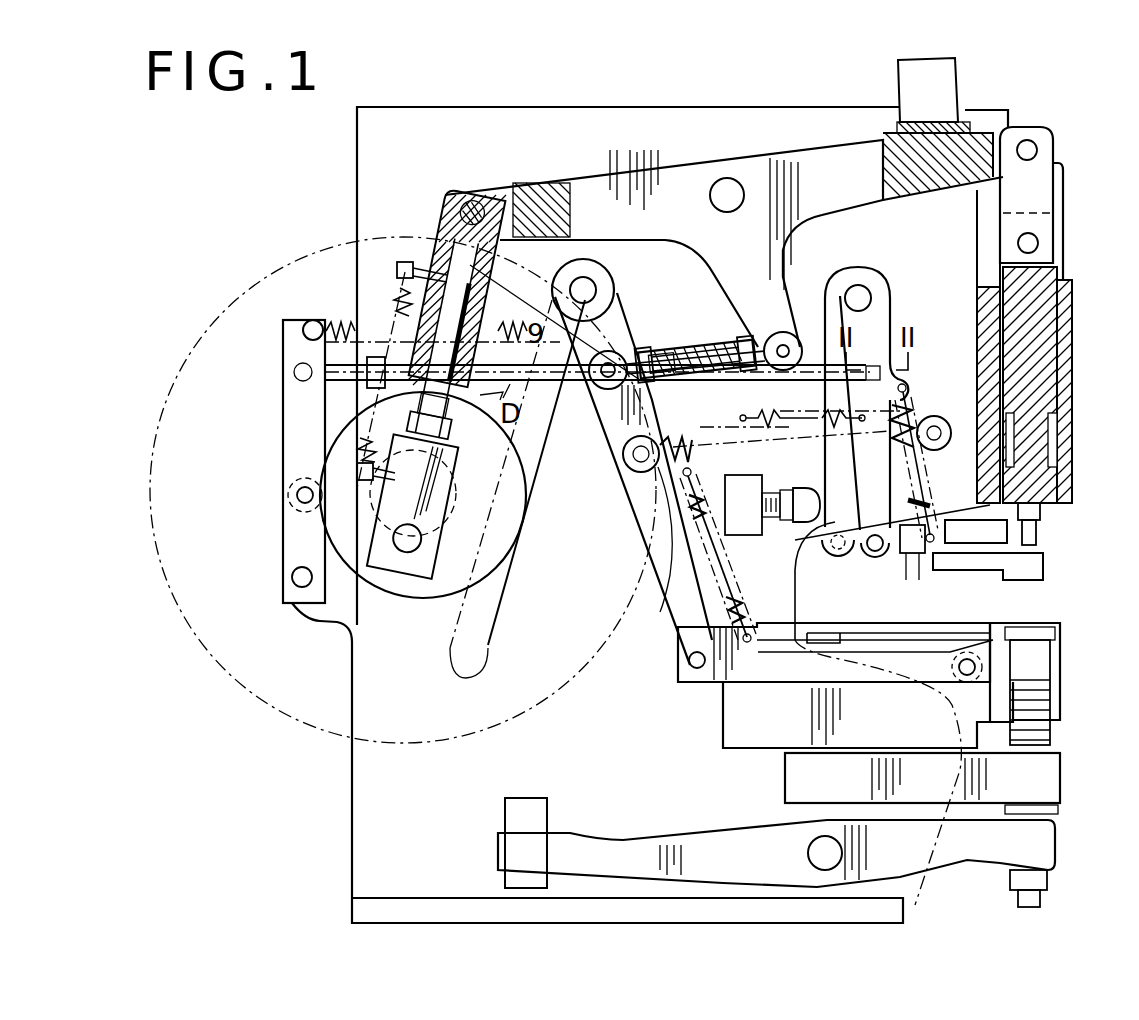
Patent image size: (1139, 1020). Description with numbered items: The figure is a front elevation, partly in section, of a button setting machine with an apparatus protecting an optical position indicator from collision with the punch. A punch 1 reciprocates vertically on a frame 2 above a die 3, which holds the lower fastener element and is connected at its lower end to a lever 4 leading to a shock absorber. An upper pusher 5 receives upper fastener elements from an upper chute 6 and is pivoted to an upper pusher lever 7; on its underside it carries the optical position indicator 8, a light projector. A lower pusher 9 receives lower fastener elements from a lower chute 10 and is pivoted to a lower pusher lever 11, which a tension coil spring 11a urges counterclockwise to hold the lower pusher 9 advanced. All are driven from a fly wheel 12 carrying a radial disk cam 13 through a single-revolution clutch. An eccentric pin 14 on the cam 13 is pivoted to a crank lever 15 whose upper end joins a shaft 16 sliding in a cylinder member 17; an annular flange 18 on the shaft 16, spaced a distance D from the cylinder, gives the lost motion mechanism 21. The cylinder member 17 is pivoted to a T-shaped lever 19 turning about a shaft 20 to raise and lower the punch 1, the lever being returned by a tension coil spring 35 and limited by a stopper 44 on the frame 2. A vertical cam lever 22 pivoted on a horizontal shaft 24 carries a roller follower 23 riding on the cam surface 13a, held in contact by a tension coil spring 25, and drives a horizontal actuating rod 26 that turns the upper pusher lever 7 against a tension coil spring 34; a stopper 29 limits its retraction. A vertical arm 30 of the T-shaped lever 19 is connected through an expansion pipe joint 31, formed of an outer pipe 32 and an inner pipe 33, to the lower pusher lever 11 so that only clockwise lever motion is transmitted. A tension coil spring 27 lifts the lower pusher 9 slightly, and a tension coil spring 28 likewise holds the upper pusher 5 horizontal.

The punch 1 is at (1040, 525).
The frame 2 is at (1065, 325).
The die 3 is at (1060, 660).
The lever 4 is at (644, 848).
The upper pusher 5 is at (910, 556).
The upper chute 6 is at (972, 545).
The upper pusher lever 7 is at (878, 318).
The optical position indicator 8 is at (1045, 566).
The lower pusher 9 is at (800, 683).
The lower chute 10 is at (825, 632).
The lower pusher lever 11 is at (498, 597).
The tension coil spring 11a is at (648, 500).
The fly wheel 12 is at (163, 548).
The radial disk cam 13 is at (335, 520).
The cam surface 13a is at (520, 545).
The eccentric pin 14 is at (402, 555).
The crank lever 15 is at (425, 580).
The shaft 16 is at (478, 304).
The cylinder member 17 is at (440, 260).
The annular flange 18 is at (429, 477).
The T-shaped lever 19 is at (597, 190).
The shaft 20 is at (730, 178).
The lost motion mechanism 21 is at (500, 258).
The vertical cam lever 22 is at (287, 410).
The roller follower 23 is at (298, 492).
The horizontal shaft 24 is at (295, 582).
The tension coil spring 25 is at (315, 320).
The horizontal actuating rod 26 is at (540, 385).
The tension coil spring 27 is at (762, 570).
The tension coil spring 28 is at (930, 505).
The stopper 29 is at (812, 522).
The vertical arm 30 is at (787, 266).
The expansion pipe joint 31 is at (707, 340).
The outer pipe 32 is at (662, 352).
The inner pipe 33 is at (688, 380).
The tension coil spring 34 is at (757, 413).
The tension coil spring 35 is at (395, 300).
The stopper 44 is at (950, 120).